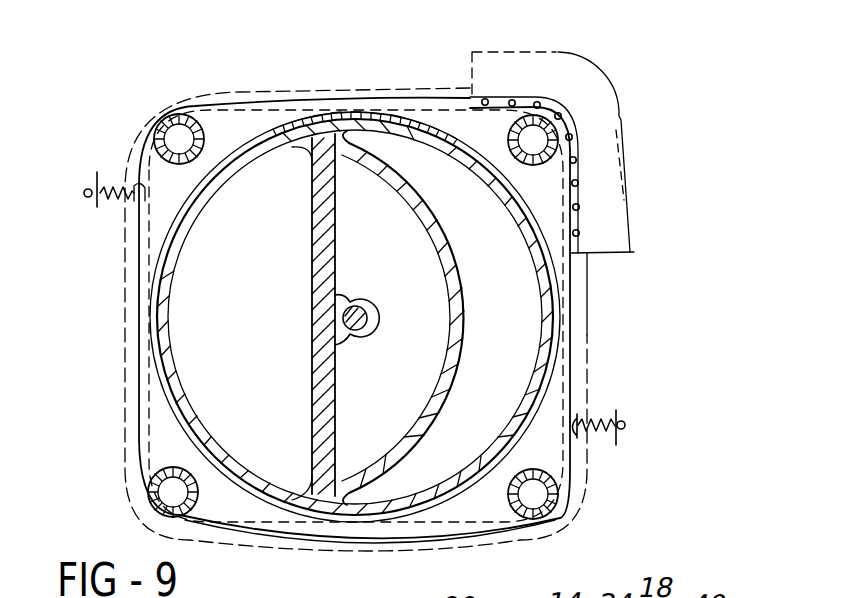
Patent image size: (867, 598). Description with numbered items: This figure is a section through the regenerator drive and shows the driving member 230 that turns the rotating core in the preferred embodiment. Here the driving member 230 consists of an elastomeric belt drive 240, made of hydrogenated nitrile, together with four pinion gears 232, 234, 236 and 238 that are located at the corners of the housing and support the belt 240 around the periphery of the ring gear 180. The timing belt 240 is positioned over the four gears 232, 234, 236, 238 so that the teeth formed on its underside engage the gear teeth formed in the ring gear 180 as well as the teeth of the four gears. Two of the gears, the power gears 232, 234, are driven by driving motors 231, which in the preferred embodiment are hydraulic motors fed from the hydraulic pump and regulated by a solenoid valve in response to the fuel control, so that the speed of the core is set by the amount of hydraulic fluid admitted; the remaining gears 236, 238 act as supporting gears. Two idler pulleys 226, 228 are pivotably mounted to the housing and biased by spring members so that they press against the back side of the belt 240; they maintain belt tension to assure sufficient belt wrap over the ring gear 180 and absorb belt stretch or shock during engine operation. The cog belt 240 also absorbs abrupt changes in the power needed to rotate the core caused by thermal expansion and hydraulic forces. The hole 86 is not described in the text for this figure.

The pivot boss 86 is at (357, 297).
The ring gear 180 is at (415, 120).
The idler pulley 226 is at (97, 200).
The idler pulley 228 is at (626, 423).
The driving member 230 is at (100, 148).
The driving motor 231 is at (183, 133).
The pinion gear 232 is at (163, 116).
The pinion gear 234 is at (560, 488).
The pinion gear 236 is at (573, 120).
The pinion gear 238 is at (160, 488).
The belt drive 240 is at (282, 99).